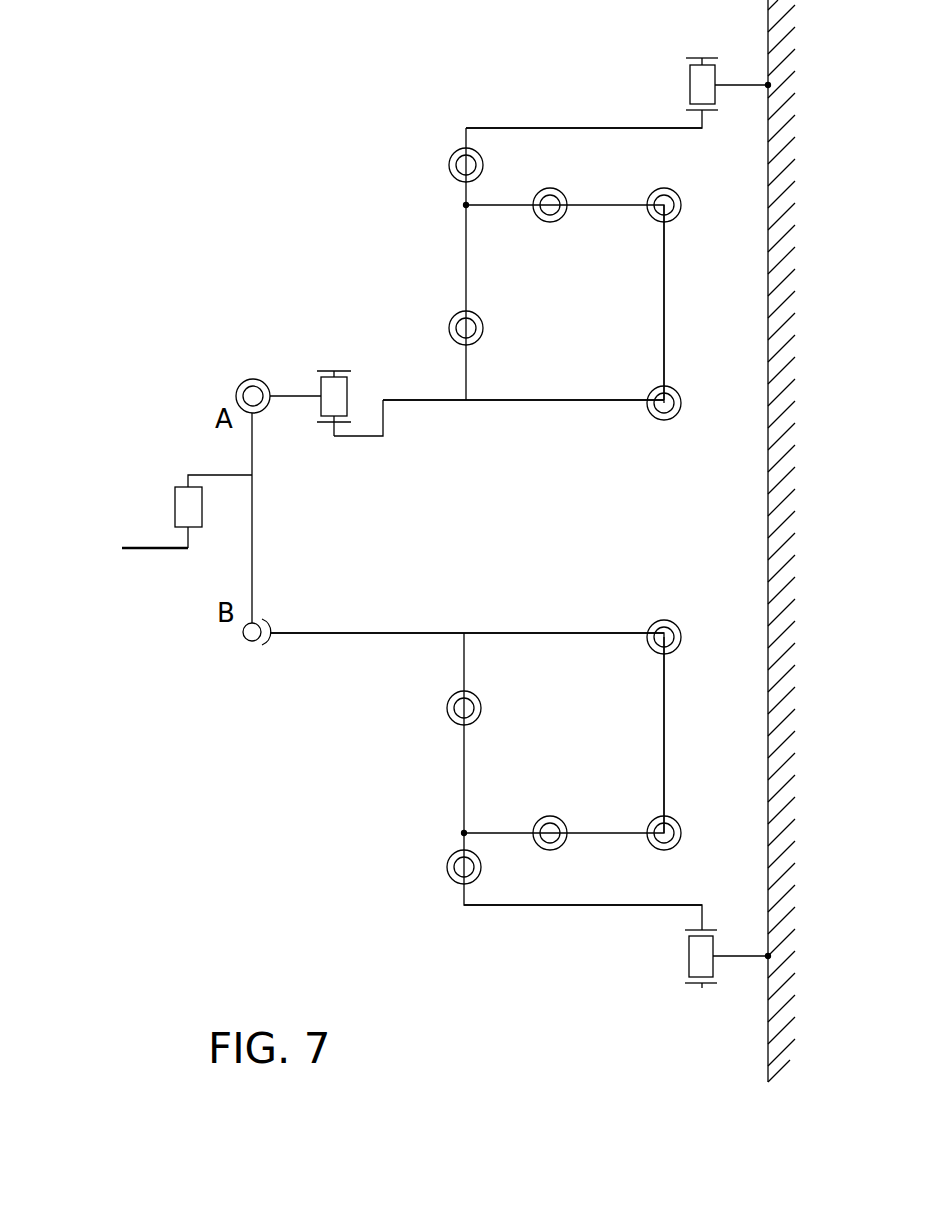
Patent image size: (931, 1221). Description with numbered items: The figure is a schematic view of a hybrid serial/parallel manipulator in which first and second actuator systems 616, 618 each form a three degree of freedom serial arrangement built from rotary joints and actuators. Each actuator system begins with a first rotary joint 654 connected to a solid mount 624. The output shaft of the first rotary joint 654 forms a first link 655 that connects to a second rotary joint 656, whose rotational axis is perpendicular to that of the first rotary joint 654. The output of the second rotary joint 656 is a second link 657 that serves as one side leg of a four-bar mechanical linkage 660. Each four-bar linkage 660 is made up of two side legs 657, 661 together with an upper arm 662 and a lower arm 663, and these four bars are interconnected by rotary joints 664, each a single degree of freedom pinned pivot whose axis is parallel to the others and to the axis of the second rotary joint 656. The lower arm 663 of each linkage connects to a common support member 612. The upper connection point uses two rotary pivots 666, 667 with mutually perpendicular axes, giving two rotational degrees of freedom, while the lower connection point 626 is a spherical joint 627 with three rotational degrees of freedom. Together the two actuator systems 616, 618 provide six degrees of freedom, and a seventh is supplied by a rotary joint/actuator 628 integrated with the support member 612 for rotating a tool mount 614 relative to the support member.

The first actuator system 616 is at (490, 79).
The second actuator system 618 is at (478, 936).
The support member 612 is at (254, 523).
The tool mount 614 is at (158, 549).
The solid mount 624 is at (766, 511).
The first junction 626 is at (238, 364).
The spherical joint 627 is at (237, 638).
The rotary joint/actuator 628 is at (170, 488).
The first rotary joint 654 is at (690, 72).
The first link 655 is at (597, 127).
The second rotary joint 656 is at (452, 153).
The second link 657 is at (463, 204).
The four-bar mechanical linkage 660 is at (584, 408).
The side leg 661 is at (666, 302).
The upper arm 662 is at (590, 204).
The lower arm 663 is at (527, 399).
The rotary joints 664 is at (676, 194).
The rotary pivot 666 is at (321, 380).
The rotary pivot 667 is at (237, 391).